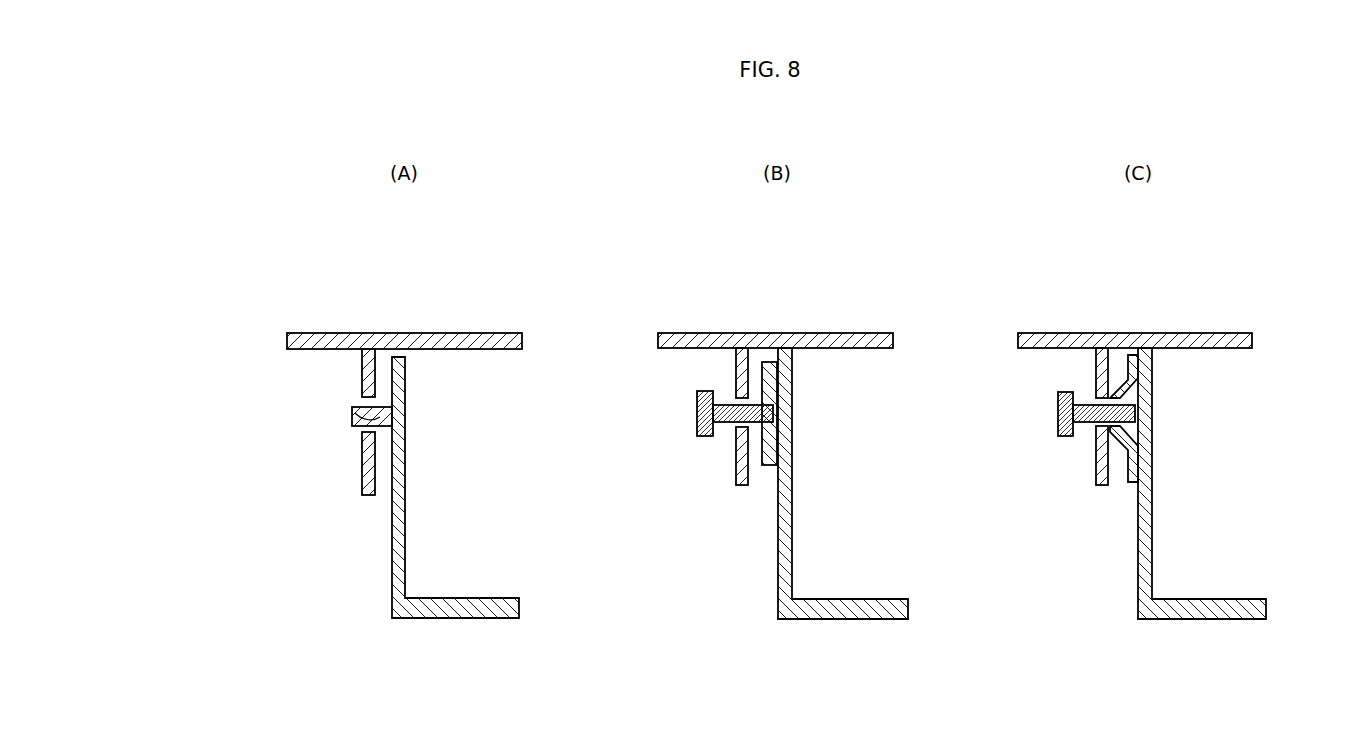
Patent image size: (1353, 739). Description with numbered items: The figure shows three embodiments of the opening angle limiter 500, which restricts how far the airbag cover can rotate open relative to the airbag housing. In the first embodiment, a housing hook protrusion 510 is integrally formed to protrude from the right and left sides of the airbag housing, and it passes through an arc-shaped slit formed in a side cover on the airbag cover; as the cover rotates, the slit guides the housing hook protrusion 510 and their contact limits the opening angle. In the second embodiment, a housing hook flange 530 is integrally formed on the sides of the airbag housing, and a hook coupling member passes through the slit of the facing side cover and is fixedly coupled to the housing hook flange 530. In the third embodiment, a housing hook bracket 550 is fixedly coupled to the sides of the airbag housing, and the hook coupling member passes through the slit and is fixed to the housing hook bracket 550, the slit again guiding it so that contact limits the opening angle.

The opening angle limiter 500 is at (296, 457).
The housing hook protrusion 510 is at (352, 413).
The housing hook flange 530 is at (755, 468).
The housing hook bracket 550 is at (1120, 465).